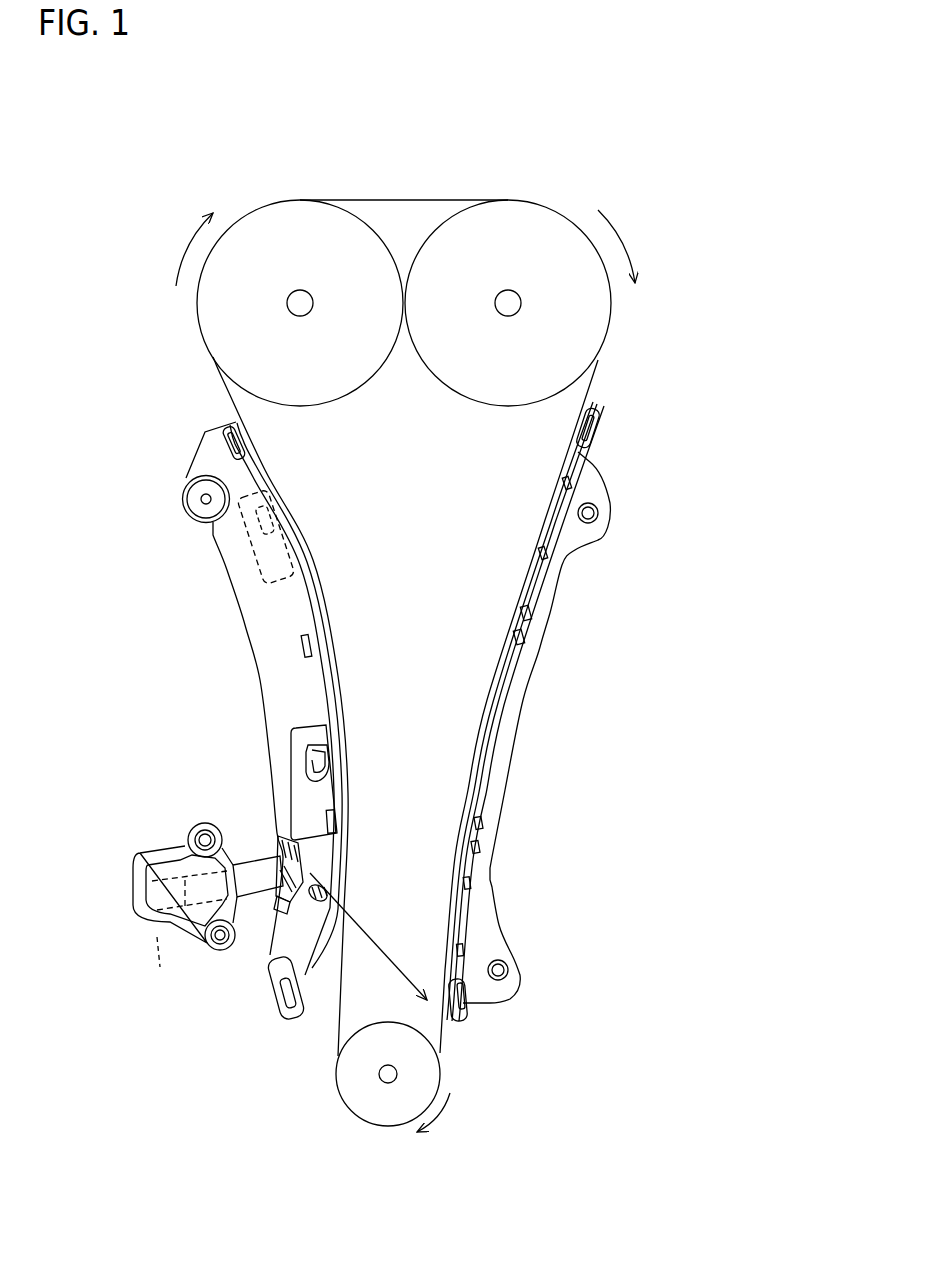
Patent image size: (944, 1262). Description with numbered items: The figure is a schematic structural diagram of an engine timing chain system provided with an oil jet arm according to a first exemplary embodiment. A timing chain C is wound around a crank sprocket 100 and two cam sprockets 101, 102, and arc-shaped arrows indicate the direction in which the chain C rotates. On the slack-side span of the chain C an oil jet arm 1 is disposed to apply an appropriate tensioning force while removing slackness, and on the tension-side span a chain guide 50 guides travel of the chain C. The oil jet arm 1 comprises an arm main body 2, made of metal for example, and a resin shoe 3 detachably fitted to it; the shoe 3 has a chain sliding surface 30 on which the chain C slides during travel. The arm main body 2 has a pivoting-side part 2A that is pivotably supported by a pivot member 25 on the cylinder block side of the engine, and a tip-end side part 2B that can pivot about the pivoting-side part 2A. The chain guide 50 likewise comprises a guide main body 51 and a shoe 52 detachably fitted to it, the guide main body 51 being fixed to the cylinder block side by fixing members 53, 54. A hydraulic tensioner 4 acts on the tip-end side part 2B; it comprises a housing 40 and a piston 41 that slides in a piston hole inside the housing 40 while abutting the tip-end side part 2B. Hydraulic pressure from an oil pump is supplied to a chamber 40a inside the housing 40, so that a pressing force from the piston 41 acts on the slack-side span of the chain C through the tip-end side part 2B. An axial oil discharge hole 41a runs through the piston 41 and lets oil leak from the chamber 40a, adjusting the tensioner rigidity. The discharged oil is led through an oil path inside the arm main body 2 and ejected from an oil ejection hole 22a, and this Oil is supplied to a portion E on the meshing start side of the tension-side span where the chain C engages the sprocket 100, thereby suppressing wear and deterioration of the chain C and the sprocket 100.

The oil jet arm 1 is at (218, 660).
The arm main body 2 is at (250, 723).
The pivoting-side part 2A is at (208, 442).
The tip-end side part 2B is at (307, 955).
The shoe 3 is at (275, 1013).
The hydraulic tensioner 4 is at (192, 891).
The oil ejection hole 22a is at (330, 898).
The pivot member 25 is at (187, 488).
The chain sliding surface 30 is at (303, 560).
The housing 40 is at (142, 865).
The chamber 40a is at (148, 968).
The piston 41 is at (270, 862).
The oil discharge hole 41a is at (270, 913).
The chain guide 50 is at (567, 697).
The guide main body 51 is at (562, 567).
The shoe 52 is at (587, 412).
The fixing member 53 is at (597, 510).
The fixing member 54 is at (508, 967).
The crank sprocket 100 is at (357, 1113).
The cam sprocket 101 is at (295, 208).
The cam sprocket 102 is at (517, 210).
The timing chain C is at (410, 198).
The portion on the meshing start side E is at (455, 1041).
The oil Oil is at (368, 936).